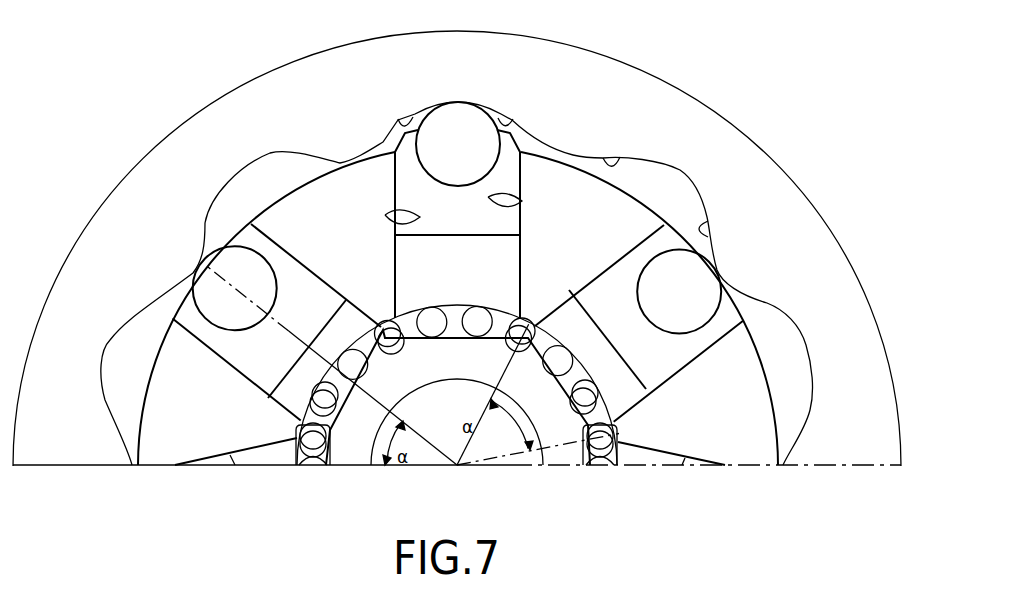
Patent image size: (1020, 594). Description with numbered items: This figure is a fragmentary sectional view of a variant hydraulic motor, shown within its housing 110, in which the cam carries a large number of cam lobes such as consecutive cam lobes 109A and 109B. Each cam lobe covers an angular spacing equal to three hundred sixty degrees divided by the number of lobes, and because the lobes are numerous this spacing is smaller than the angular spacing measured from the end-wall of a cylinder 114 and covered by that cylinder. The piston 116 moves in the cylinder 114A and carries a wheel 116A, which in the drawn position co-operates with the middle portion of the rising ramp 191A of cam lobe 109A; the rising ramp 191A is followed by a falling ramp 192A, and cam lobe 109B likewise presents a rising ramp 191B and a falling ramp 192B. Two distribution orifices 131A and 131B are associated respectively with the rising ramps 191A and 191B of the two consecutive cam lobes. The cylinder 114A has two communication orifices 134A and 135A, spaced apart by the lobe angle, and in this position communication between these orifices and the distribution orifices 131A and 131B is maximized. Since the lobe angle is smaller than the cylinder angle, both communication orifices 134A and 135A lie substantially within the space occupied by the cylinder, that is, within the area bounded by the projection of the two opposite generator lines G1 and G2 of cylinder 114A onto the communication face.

The stator housing 110 is at (792, 257).
The piston 116 is at (417, 195).
The wheel 116A is at (451, 137).
The rising ramp 191A is at (410, 116).
The second notch 192A is at (503, 112).
The rising ramp 191B is at (615, 162).
The second notch 192B is at (700, 228).
The cam lobe 109A is at (545, 150).
The cam lobe 109B is at (645, 172).
The generator line G1 is at (395, 225).
The generator line G2 is at (520, 213).
The cylinder 114 is at (610, 380).
The cylinder 114A is at (487, 276).
The distribution orifice 131A is at (430, 325).
The distribution orifice 131B is at (521, 320).
The communication orifice 134A is at (415, 346).
The communication orifice 135A is at (488, 342).